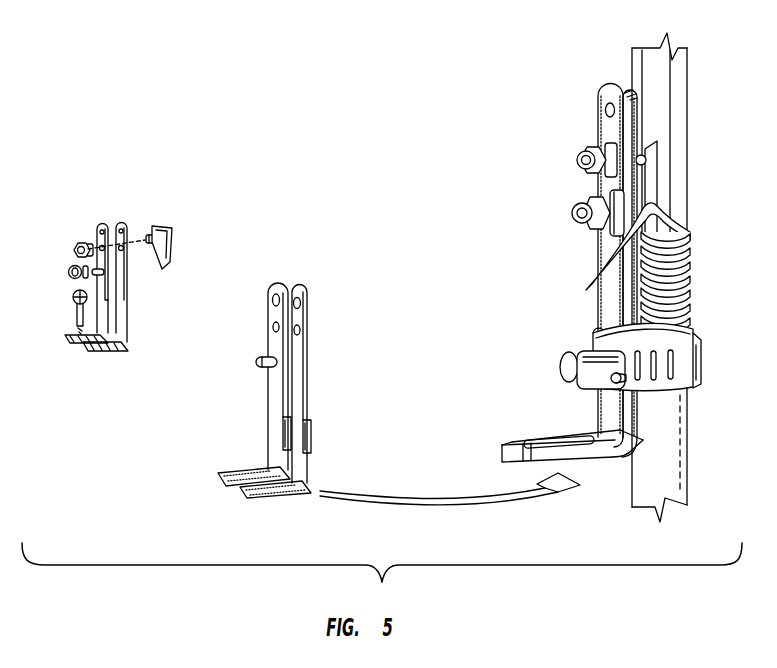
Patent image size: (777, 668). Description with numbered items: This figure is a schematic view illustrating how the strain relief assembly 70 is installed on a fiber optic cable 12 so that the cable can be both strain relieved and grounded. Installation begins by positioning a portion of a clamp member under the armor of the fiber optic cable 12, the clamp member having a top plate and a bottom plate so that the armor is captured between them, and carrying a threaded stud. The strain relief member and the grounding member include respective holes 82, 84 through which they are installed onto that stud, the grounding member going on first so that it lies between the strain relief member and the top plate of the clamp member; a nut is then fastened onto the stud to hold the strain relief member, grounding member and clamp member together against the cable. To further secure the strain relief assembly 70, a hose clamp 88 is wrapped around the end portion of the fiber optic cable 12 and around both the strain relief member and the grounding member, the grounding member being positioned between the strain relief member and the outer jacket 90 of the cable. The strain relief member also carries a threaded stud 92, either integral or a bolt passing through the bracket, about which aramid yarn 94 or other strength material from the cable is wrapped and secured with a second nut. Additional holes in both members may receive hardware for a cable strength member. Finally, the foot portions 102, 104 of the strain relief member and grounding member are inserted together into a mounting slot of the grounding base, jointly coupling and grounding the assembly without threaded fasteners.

The fiber optic cable 12 is at (693, 277).
The strain relief assembly 70 is at (587, 277).
The hole 82 is at (248, 330).
The hole 84 is at (324, 345).
The hose clamp 88 is at (568, 387).
The outer jacket 90 is at (715, 457).
The threaded stud 92 is at (247, 382).
The aramid yarn 94 is at (563, 201).
The foot portion 102 is at (537, 408).
The foot portion 104 is at (593, 489).